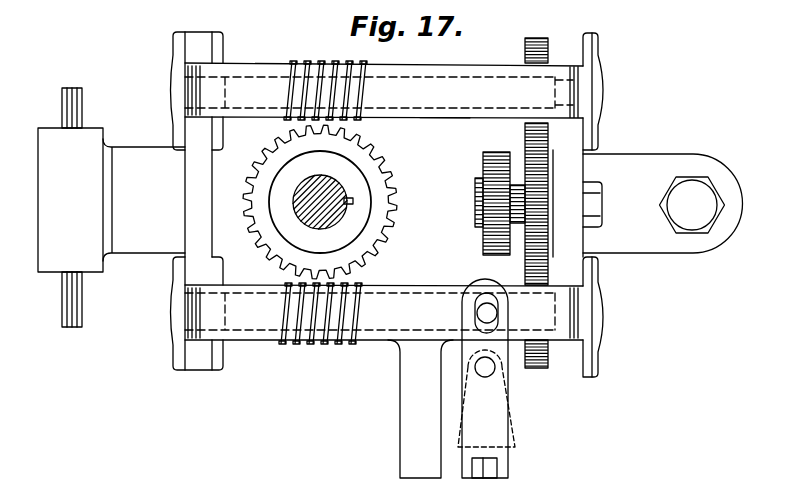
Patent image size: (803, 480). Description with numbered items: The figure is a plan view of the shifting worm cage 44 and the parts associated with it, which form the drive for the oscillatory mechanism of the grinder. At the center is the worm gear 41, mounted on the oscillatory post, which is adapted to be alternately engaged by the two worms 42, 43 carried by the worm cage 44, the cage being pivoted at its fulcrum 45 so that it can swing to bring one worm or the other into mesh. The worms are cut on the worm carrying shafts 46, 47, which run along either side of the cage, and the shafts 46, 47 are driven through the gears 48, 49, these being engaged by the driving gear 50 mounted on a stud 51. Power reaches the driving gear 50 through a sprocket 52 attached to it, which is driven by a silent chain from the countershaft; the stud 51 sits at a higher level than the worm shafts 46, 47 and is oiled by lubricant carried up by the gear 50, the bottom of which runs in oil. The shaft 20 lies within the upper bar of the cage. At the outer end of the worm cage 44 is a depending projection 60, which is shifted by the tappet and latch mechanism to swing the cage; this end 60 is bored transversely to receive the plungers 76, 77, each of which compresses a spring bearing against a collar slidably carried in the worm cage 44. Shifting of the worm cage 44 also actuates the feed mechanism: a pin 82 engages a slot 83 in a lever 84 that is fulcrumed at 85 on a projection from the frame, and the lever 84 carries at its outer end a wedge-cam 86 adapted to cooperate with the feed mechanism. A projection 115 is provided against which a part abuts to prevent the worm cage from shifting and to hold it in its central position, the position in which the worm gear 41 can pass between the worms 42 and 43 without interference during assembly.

The shaft 20 is at (627, 94).
The worm gear 41 is at (368, 168).
The worm 42 is at (290, 62).
The worm 43 is at (297, 345).
The worm cage 44 is at (428, 72).
The fulcrum 45 is at (700, 192).
The worm carrying shaft 46 is at (443, 119).
The worm carrying shaft 47 is at (405, 293).
The gear 48 is at (543, 368).
The gear 49 is at (543, 42).
The driving gear 50 is at (530, 163).
The stud 51 is at (478, 200).
The sprocket 52 is at (482, 241).
The depending projection 60 is at (47, 188).
The plunger 76 is at (72, 105).
The plunger 77 is at (68, 298).
The pin 82 is at (480, 318).
The slot 83 is at (493, 327).
The lever 84 is at (496, 378).
The fulcrum 85 is at (488, 368).
The wedge-cam 86 is at (497, 465).
The projection 115 is at (408, 402).